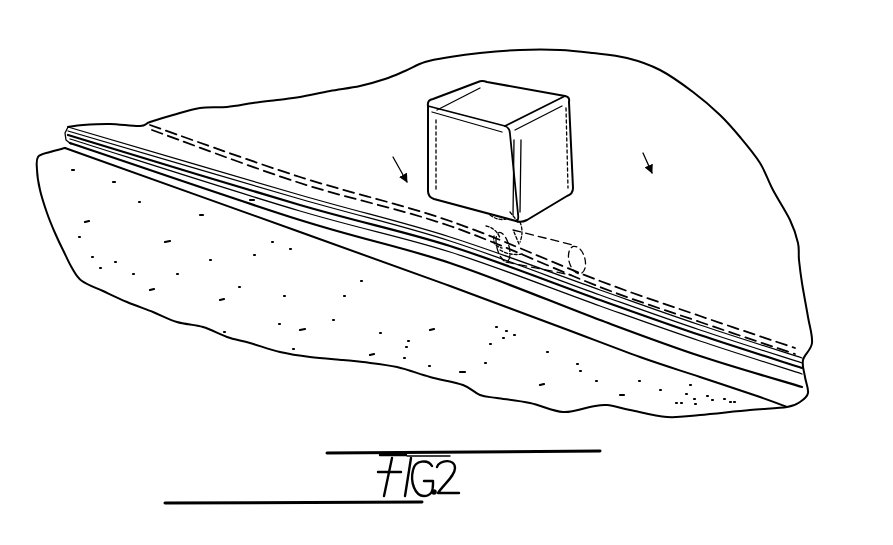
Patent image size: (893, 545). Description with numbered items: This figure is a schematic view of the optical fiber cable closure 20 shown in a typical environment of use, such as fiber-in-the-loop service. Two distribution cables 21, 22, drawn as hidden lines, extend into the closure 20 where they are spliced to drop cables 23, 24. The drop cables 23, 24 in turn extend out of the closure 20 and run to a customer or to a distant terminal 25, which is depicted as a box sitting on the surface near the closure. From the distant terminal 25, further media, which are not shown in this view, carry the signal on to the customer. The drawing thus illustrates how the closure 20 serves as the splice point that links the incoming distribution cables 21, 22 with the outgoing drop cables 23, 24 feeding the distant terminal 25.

The optical fiber cable closure 20 is at (590, 258).
The distribution cable 21 is at (275, 164).
The distribution cable 22 is at (680, 315).
The drop cable 23 is at (555, 214).
The drop cable 24 is at (476, 225).
The distant terminal 25 is at (525, 95).